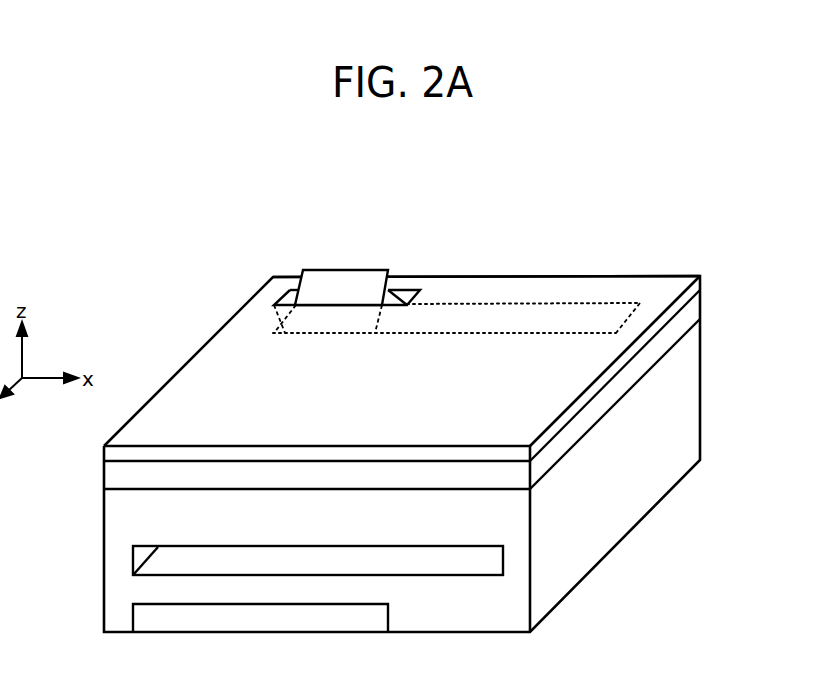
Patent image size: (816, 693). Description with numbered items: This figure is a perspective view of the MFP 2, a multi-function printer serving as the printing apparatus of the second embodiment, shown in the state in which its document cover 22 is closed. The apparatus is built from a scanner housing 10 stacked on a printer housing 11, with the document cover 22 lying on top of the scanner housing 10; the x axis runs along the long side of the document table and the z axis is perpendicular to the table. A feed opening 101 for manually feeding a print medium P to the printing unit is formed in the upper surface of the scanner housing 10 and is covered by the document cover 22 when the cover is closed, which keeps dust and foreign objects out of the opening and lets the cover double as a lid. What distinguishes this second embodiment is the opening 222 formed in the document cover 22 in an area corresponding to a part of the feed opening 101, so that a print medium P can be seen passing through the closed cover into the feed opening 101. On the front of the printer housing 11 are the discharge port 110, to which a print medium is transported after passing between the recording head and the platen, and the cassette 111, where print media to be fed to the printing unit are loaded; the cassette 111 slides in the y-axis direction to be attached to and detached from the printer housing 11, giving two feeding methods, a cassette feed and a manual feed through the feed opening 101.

The MFP 2 is at (206, 222).
The scanner housing 10 is at (703, 284).
The printer housing 11 is at (698, 310).
The document cover 22 is at (669, 284).
The opening 222 is at (410, 301).
The print medium P is at (327, 284).
The feed opening 101 is at (273, 303).
The discharge port 110 is at (133, 552).
The cassette 111 is at (153, 610).